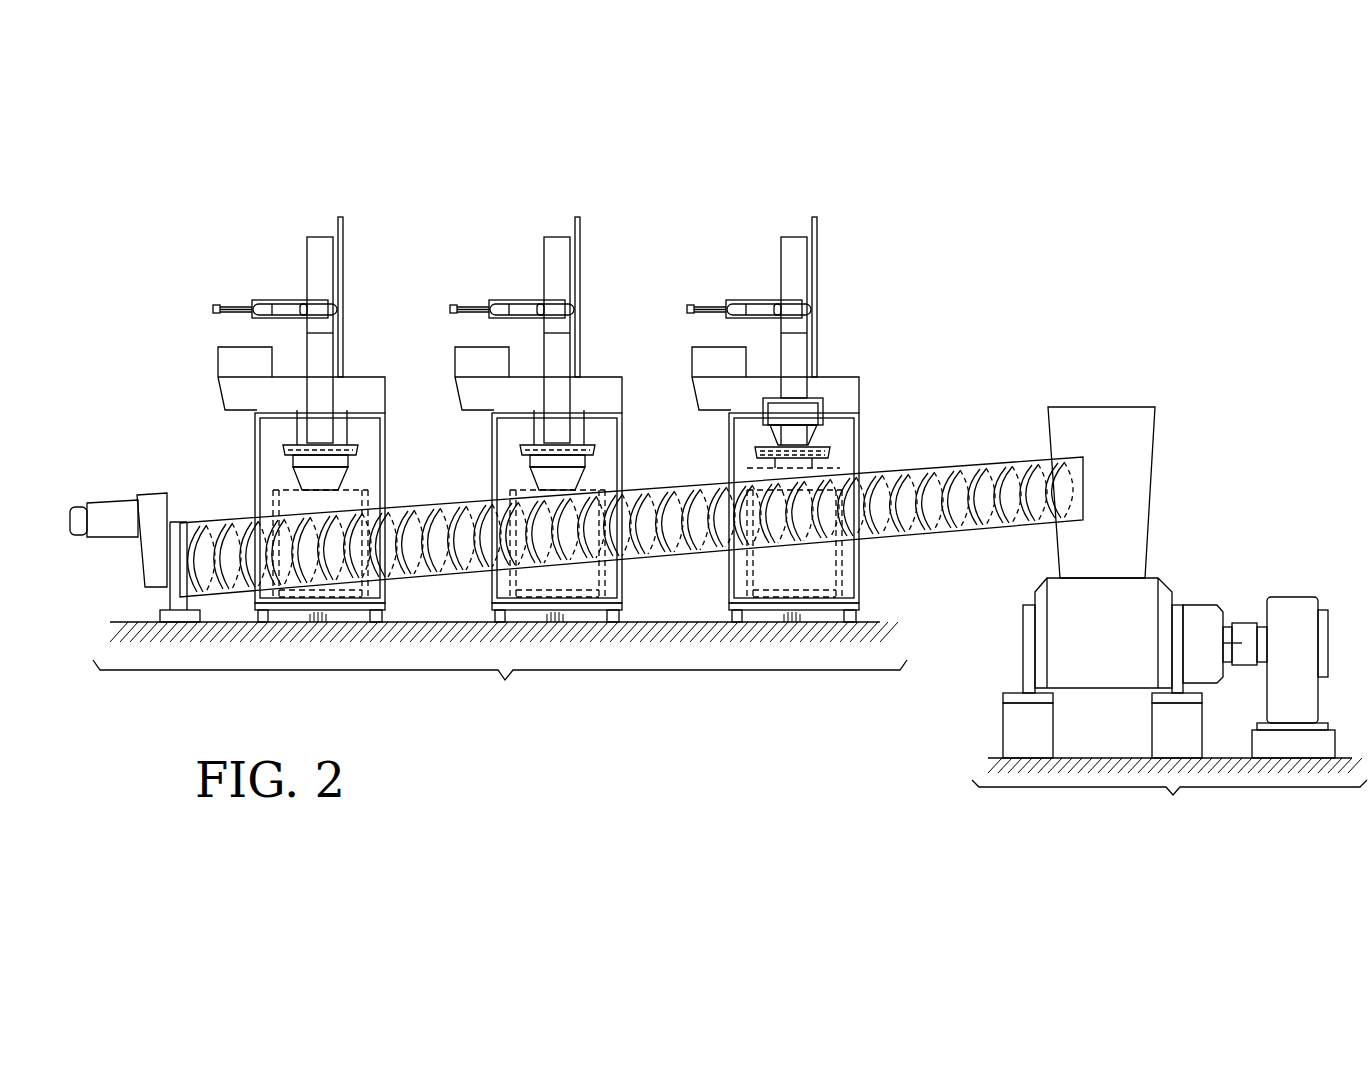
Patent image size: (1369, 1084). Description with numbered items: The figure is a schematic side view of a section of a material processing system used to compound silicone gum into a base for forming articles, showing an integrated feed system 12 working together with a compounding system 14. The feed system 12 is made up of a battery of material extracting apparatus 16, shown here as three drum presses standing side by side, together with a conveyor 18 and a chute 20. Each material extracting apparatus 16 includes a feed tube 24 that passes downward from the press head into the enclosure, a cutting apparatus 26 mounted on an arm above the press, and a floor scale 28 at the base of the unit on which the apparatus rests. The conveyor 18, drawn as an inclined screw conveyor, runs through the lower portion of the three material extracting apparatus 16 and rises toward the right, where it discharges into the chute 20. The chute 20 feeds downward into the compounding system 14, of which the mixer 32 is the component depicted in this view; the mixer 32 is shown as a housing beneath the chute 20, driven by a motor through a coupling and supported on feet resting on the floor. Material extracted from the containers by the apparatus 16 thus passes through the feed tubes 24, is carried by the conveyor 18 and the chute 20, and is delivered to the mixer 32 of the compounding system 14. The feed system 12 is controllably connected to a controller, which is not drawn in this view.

The integrated feed system 12 is at (500, 685).
The compounding system 14 is at (1169, 800).
The material extracting apparatus 16 is at (243, 452).
The conveyor 18 is at (948, 465).
The chute 20 is at (1155, 437).
The feed tube 24 is at (337, 393).
The cutting apparatus 26 is at (262, 300).
The floor scale 28 is at (387, 604).
The mixer 32 is at (1168, 592).